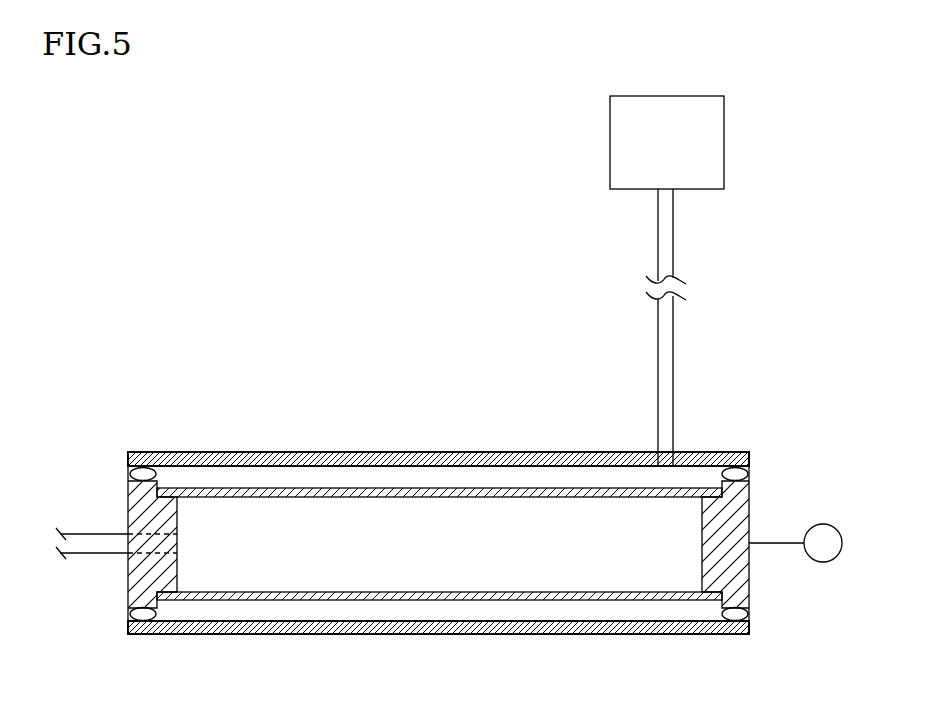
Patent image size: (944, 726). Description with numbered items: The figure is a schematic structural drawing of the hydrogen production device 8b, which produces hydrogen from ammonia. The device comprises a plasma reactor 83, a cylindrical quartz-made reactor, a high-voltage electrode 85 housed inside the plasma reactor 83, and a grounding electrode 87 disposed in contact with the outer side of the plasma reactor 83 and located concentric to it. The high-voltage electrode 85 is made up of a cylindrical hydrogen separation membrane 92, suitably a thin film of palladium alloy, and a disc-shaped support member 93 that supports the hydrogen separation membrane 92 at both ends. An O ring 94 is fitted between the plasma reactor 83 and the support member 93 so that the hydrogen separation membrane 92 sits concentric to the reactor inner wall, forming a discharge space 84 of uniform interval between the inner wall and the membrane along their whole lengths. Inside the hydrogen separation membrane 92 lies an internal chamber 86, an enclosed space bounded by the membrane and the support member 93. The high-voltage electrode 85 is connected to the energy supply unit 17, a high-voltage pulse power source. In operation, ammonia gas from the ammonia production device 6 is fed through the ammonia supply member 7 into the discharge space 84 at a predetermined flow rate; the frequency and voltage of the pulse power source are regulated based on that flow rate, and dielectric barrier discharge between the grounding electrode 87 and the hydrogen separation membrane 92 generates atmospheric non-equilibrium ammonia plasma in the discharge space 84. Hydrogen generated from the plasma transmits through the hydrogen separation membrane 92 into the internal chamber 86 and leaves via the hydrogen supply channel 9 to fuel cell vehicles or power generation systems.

The hydrogen production device 8b is at (284, 186).
The ammonia production device 6 is at (712, 124).
The ammonia supply member 7 is at (668, 393).
The high-voltage electrode 85 is at (200, 382).
The support member 93 is at (128, 497).
The hydrogen separation membrane 92 is at (200, 497).
The plasma reactor 83 is at (284, 452).
The discharge space 84 is at (357, 478).
The grounding electrode 87 is at (435, 454).
The internal chamber 86 is at (415, 570).
The hydrogen supply channel 9 is at (100, 555).
The energy supply unit 17 is at (822, 531).
The O ring 94 is at (748, 612).